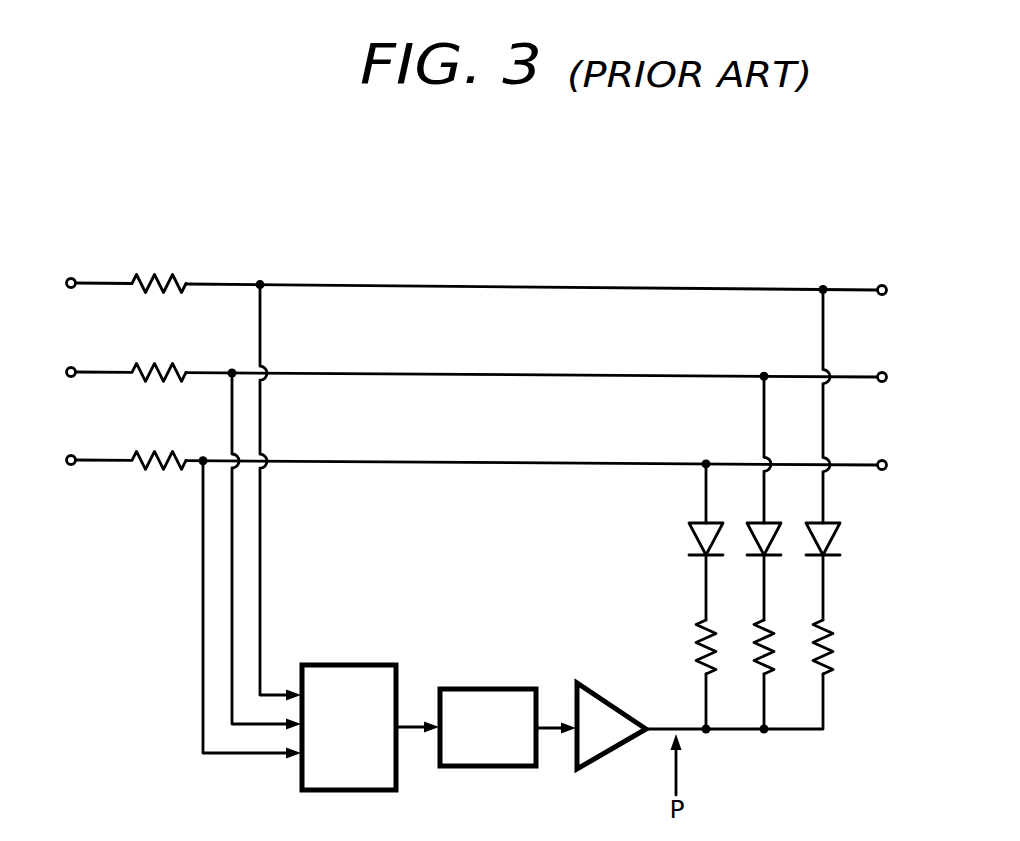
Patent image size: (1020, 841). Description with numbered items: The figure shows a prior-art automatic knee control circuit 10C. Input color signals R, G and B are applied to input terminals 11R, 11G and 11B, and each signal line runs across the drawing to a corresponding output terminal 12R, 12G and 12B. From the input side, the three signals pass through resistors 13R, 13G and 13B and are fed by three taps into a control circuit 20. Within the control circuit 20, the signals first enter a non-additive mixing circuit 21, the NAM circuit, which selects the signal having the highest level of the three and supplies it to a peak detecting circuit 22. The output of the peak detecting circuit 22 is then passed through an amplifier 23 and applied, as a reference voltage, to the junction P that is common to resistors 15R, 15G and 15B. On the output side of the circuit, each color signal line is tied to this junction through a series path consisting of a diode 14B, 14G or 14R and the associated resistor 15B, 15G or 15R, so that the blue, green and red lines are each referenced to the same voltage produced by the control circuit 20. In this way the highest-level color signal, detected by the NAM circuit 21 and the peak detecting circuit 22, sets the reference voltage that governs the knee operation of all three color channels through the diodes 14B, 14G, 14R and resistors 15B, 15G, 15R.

The automatic knee control circuit 10C is at (470, 223).
The input terminal 11R is at (71, 288).
The input terminal 11G is at (71, 377).
The input terminal 11B is at (71, 465).
The output terminal 12R is at (882, 295).
The output terminal 12G is at (882, 382).
The output terminal 12B is at (882, 470).
The resistor 13R is at (156, 292).
The resistor 13G is at (156, 381).
The resistor 13B is at (156, 469).
The diode 14B is at (712, 558).
The diode 14G is at (770, 558).
The diode 14R is at (829, 558).
The resistor 15B is at (712, 650).
The resistor 15G is at (770, 650).
The resistor 15R is at (829, 650).
The control circuit 20 is at (493, 583).
The non-additive mixing circuit 21 is at (354, 663).
The peak detecting circuit 22 is at (496, 687).
The amplifier 23 is at (612, 700).